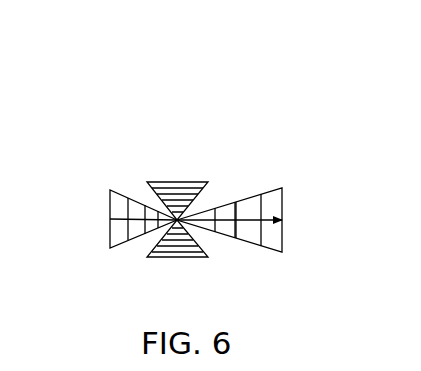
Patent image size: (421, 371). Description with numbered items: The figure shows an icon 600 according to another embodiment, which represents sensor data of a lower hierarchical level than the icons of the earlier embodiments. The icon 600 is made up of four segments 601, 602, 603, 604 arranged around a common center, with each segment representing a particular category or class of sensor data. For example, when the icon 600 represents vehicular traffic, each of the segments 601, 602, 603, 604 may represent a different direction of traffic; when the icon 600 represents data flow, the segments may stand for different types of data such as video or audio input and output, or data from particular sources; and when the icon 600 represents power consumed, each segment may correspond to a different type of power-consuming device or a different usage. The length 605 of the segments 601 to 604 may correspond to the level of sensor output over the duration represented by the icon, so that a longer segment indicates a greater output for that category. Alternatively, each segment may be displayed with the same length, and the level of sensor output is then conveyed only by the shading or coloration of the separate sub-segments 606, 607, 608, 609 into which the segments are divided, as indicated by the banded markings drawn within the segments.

The icon 600 is at (294, 85).
The segment 601 is at (297, 190).
The segment 602 is at (222, 267).
The segment 603 is at (193, 163).
The segment 604 is at (99, 197).
The length 605 is at (245, 213).
The sub-segment 606 is at (177, 220).
The sub-segment 607 is at (177, 220).
The sub-segment 608 is at (177, 220).
The sub-segment 609 is at (177, 220).